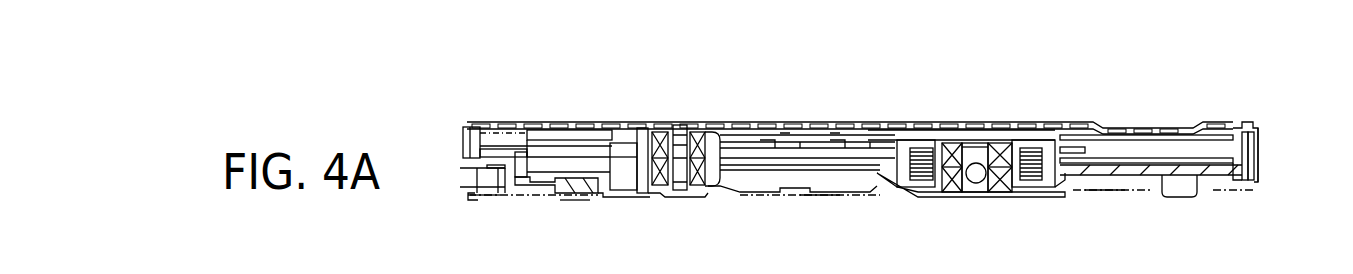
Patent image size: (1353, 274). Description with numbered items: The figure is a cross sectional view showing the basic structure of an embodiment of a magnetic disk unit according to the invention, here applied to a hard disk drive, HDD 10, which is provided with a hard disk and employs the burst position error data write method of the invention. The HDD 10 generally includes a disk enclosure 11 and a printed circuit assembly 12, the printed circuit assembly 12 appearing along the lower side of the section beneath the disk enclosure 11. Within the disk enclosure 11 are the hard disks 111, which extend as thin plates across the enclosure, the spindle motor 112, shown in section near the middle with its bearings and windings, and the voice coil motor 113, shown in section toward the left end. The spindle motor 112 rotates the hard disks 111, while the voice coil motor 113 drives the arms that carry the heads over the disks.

The HDD 10 is at (503, 78).
The disk enclosure 11 is at (1256, 175).
The printed circuit assembly 12 is at (487, 197).
The hard disks 111 is at (1252, 160).
The spindle motor 112 is at (992, 124).
The voice coil motor 113 is at (700, 124).